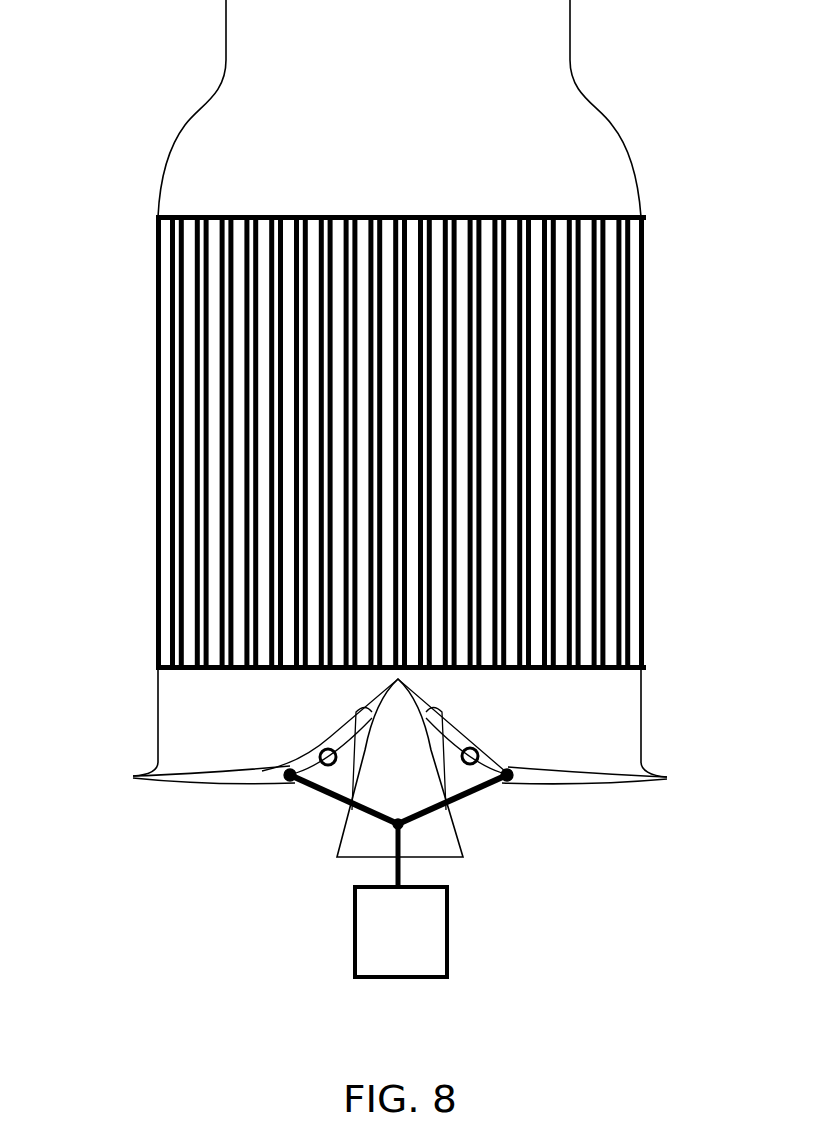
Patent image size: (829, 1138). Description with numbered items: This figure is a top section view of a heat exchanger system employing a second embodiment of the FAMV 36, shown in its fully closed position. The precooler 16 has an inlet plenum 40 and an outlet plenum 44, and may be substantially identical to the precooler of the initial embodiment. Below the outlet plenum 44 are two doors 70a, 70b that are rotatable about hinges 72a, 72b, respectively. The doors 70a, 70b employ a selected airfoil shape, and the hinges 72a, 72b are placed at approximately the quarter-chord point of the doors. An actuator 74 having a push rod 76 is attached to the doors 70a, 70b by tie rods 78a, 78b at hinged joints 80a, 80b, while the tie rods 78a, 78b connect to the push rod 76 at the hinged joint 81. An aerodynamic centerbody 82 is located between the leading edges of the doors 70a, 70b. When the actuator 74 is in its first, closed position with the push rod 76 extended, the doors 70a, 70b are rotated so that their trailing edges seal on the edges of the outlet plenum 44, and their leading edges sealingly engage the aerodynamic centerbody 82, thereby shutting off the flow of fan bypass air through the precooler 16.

The inlet plenum 40 is at (607, 113).
The precooler 16 is at (642, 377).
The outlet plenum 44 is at (641, 738).
The door 70a is at (210, 778).
The door 70b is at (558, 782).
The hinge 72a is at (323, 751).
The hinge 72b is at (474, 749).
The tie rod 78a is at (312, 792).
The tie rod 78b is at (480, 830).
The hinged joint 80a is at (285, 785).
The hinged joint 80b is at (513, 783).
The hinged joint 81 is at (390, 818).
The push rod 76 is at (395, 876).
The actuator 74 is at (397, 938).
The aerodynamic centerbody 82 is at (360, 840).
The FAMV 36 is at (467, 882).